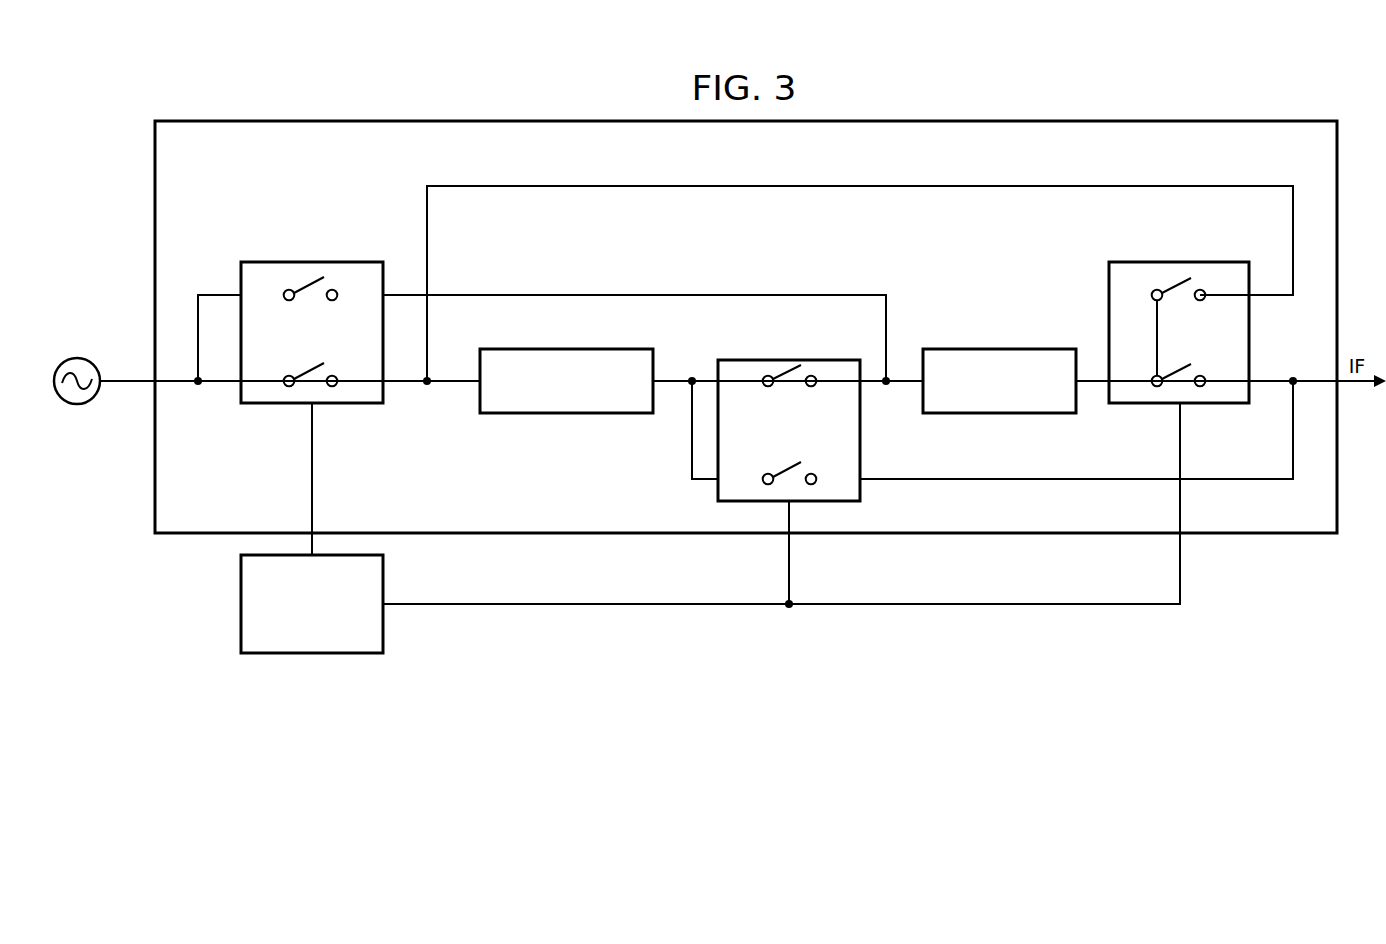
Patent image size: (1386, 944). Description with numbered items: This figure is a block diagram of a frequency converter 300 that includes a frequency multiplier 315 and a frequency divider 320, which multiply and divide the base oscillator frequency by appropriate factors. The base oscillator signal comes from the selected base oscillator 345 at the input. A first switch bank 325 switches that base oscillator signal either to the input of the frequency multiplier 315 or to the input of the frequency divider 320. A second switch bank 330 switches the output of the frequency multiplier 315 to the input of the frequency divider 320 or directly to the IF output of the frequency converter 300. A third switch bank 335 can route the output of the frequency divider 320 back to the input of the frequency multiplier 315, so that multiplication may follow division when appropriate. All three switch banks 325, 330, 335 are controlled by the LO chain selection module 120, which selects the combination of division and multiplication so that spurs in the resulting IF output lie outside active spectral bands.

The frequency converter 300 is at (338, 120).
The selected base oscillator 345 is at (73, 404).
The first switch bank 325 is at (306, 262).
The frequency multiplier 315 is at (566, 416).
The second switch bank 330 is at (860, 428).
The frequency divider 320 is at (1000, 415).
The third switch bank 335 is at (1189, 262).
The LO chain selection module 120 is at (241, 613).